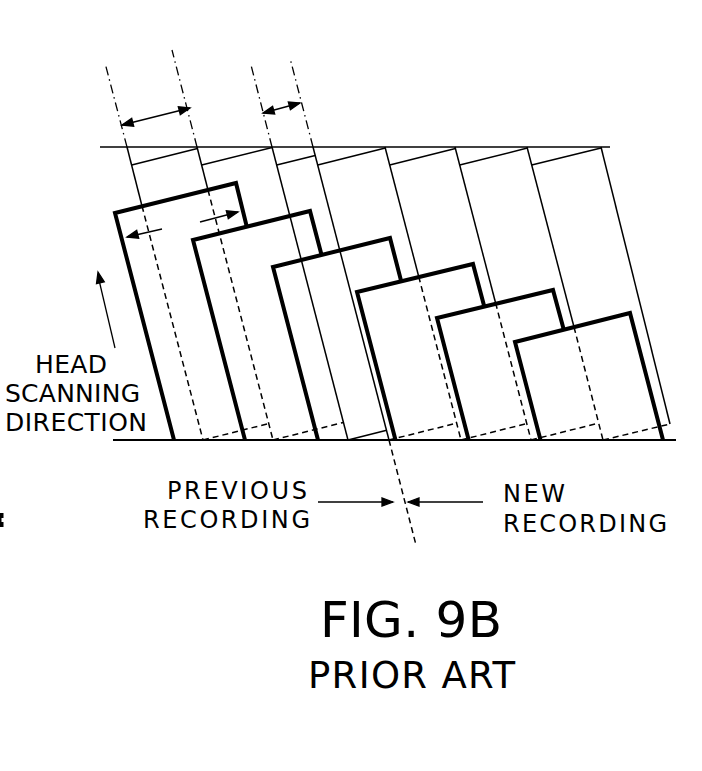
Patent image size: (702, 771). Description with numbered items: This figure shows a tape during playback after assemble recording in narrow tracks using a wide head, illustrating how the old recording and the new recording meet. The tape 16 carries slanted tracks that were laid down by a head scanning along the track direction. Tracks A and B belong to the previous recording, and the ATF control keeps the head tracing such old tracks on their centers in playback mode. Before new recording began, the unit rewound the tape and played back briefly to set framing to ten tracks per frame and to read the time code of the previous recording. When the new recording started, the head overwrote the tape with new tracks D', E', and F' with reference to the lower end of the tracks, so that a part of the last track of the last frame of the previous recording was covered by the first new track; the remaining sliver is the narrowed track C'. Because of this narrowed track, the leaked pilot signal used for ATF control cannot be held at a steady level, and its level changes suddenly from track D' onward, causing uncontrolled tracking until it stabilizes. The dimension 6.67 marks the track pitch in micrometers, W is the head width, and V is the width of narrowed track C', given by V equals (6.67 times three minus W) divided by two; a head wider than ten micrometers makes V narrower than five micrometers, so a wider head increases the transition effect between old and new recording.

The magnetic tape 16 is at (546, 148).
The track A of the previous recording A is at (181, 327).
The track B of the previous recording B is at (257, 341).
The narrowed track C' is at (337, 354).
The track D' of the newly recorded portion D' is at (420, 367).
The track E' of the newly recorded portion E' is at (500, 380).
The track F' of the newly recorded portion F' is at (589, 392).
The track pitch of 6.67 micrometers 6.67 is at (156, 104).
The width of narrowed track V is at (281, 96).
The head width W is at (182, 225).